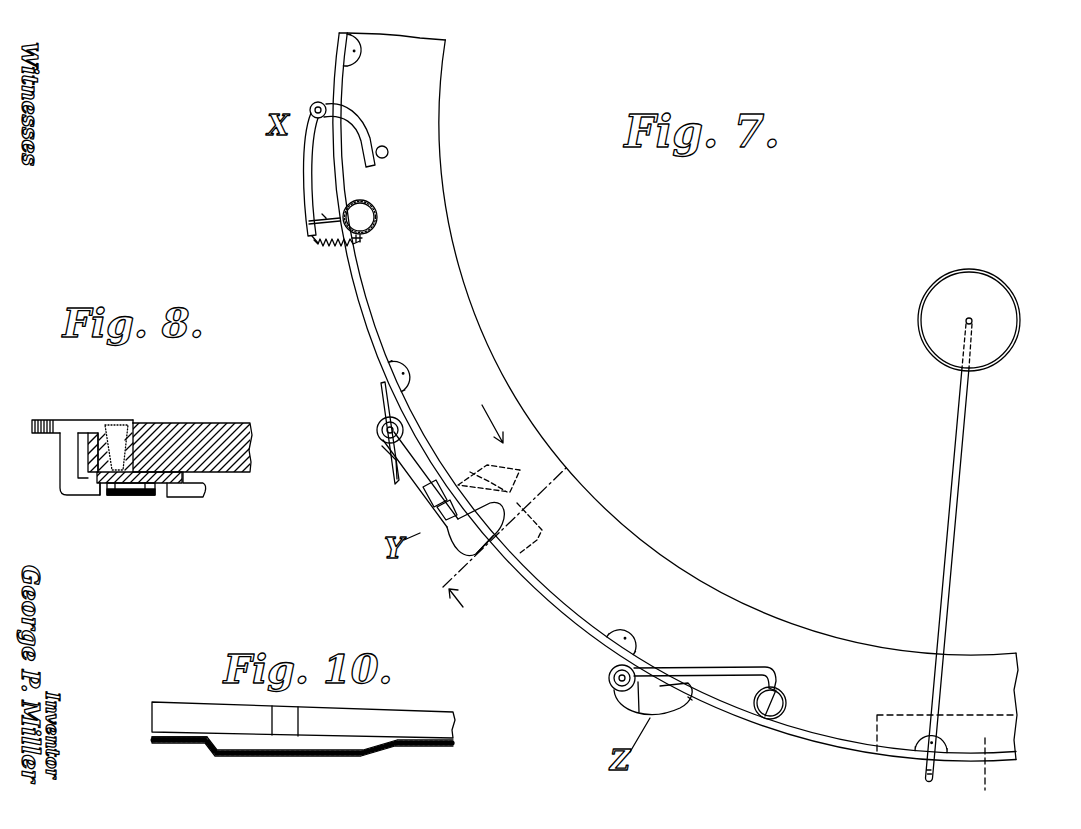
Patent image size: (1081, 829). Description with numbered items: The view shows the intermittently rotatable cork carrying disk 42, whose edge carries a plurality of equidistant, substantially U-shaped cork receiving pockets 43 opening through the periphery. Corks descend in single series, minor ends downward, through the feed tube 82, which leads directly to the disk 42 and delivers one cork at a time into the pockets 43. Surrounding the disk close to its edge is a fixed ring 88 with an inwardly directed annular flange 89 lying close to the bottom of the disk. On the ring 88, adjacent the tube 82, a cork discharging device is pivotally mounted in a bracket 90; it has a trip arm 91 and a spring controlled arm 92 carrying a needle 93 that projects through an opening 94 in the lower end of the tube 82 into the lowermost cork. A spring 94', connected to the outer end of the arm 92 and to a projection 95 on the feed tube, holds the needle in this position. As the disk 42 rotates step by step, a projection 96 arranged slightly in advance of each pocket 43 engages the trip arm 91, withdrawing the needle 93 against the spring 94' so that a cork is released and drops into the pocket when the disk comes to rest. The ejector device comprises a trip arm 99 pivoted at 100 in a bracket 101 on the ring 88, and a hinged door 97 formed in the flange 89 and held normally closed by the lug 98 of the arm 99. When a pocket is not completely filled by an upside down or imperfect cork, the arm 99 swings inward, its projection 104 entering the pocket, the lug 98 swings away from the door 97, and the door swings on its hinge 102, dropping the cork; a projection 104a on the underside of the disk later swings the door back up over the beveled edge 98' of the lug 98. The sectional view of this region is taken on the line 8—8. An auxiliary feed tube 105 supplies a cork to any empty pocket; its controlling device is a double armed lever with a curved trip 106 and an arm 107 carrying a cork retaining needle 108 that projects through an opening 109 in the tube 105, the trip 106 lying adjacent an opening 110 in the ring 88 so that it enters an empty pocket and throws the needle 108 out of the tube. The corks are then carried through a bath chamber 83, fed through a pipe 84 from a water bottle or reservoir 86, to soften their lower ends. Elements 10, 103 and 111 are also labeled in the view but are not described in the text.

In FIG. 7, the section line 8 is at (507, 527).
In FIG. 7, the support / base member 10 is at (813, 744).
In FIG. 7, the cork carrying disk 42 is at (678, 396).
In FIG. 8, the cork carrying disk 42 is at (200, 425).
In FIG. 10, the cork carrying disk 42 is at (182, 708).
In FIG. 7, the cork receiving pockets 43 is at (368, 54).
In FIG. 8, the cork receiving pockets 43 is at (155, 423).
In FIG. 10, the cork receiving pockets 43 is at (292, 718).
In FIG. 7, the feed tube 82 is at (378, 211).
In FIG. 7, the bath chamber 83 is at (984, 775).
In FIG. 10, the bath chamber 83 is at (297, 752).
In FIG. 7, the pipe 84 is at (953, 601).
In FIG. 7, the water bottle or reservoir 86 is at (942, 343).
In FIG. 7, the fixed ring 88 is at (370, 328).
In FIG. 8, the fixed ring 88 is at (88, 455).
In FIG. 10, the inwardly directed annular flange 89 is at (173, 745).
In FIG. 7, the bracket 90 is at (322, 101).
In FIG. 7, the trip arm 91 is at (360, 121).
In FIG. 7, the spring controlled arm 92 is at (303, 159).
In FIG. 7, the needle 93 is at (318, 219).
In FIG. 7, the opening 94 is at (337, 270).
In FIG. 7, the spring 94' is at (310, 258).
In FIG. 7, the projection 95 is at (363, 241).
In FIG. 7, the projection 96 is at (388, 147).
In FIG. 7, the hinged door 97 is at (548, 540).
In FIG. 8, the hinged door 97 is at (162, 484).
In FIG. 7, the lug 98 is at (447, 548).
In FIG. 8, the lug 98 is at (70, 483).
In FIG. 8, the beveled edge 98' is at (78, 520).
In FIG. 7, the trip arm 99 is at (417, 497).
In FIG. 8, the trip arm 99 is at (53, 420).
In FIG. 7, the pivot 100 is at (376, 431).
In FIG. 7, the bracket 101 is at (382, 410).
In FIG. 7, the hinge 102 is at (473, 468).
In FIG. 8, the hinge 102 is at (122, 496).
In FIG. 7, the bracket 103 is at (395, 462).
In FIG. 7, the projection 104 is at (478, 538).
In FIG. 8, the projection 104 is at (92, 423).
In FIG. 8, the projection 104a is at (205, 496).
In FIG. 7, the auxiliary feed tube 105 is at (789, 712).
In FIG. 7, the trip arm 106 is at (656, 714).
In FIG. 7, the arm 107 is at (712, 670).
In FIG. 7, the cork retaining needle 108 is at (788, 705).
In FIG. 7, the opening 109 is at (777, 682).
In FIG. 7, the opening 110 is at (692, 700).
In FIG. 7, the pivot 111 is at (612, 663).